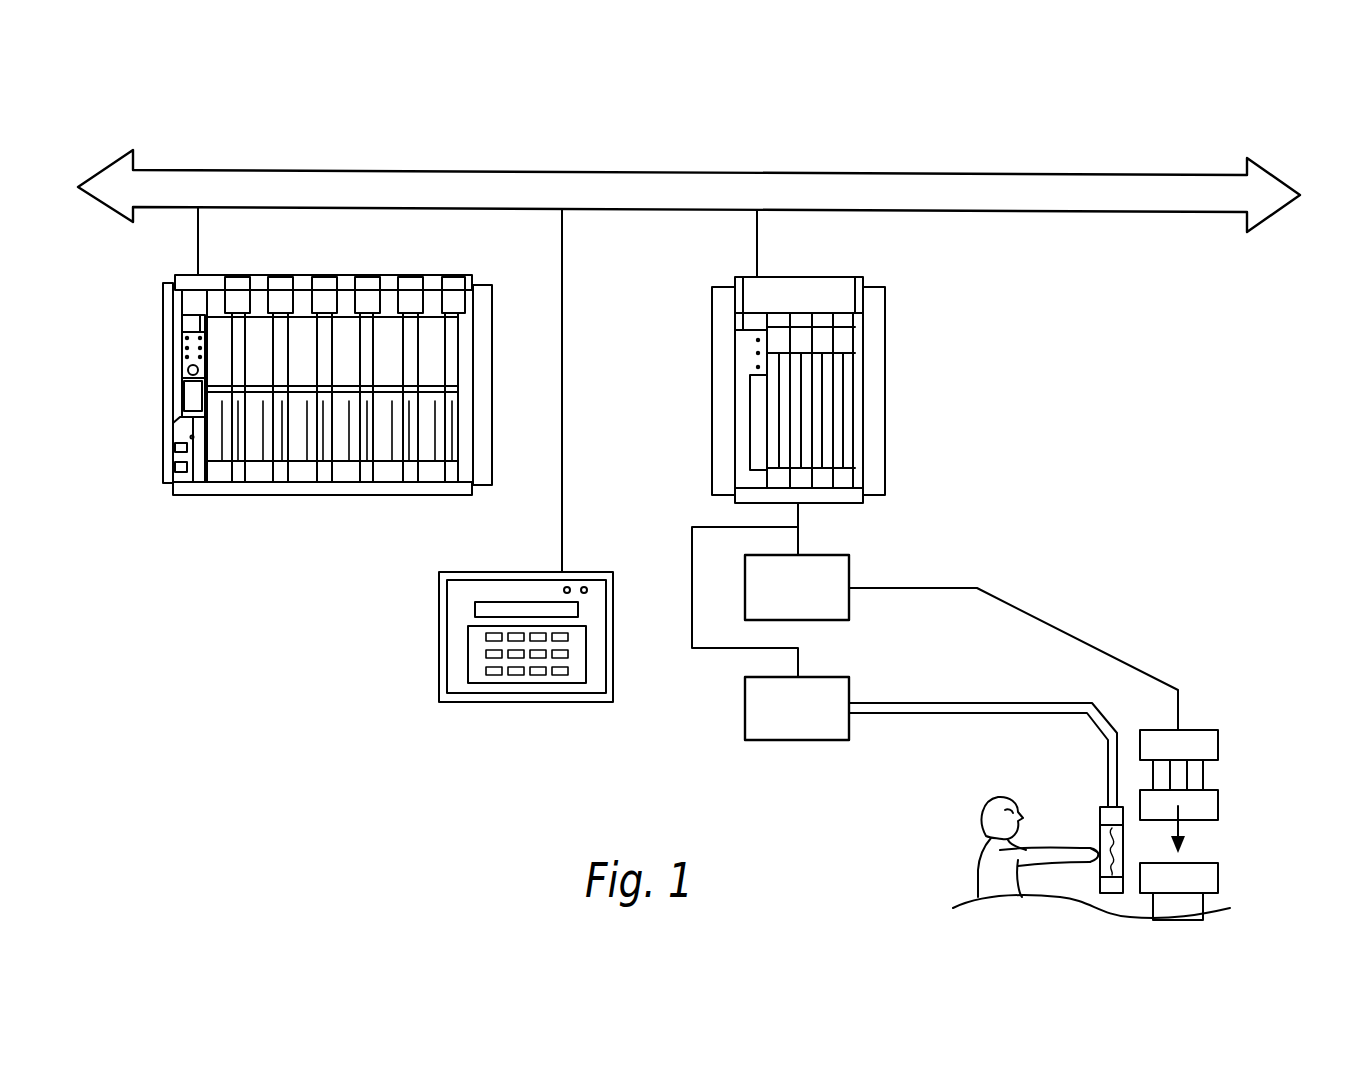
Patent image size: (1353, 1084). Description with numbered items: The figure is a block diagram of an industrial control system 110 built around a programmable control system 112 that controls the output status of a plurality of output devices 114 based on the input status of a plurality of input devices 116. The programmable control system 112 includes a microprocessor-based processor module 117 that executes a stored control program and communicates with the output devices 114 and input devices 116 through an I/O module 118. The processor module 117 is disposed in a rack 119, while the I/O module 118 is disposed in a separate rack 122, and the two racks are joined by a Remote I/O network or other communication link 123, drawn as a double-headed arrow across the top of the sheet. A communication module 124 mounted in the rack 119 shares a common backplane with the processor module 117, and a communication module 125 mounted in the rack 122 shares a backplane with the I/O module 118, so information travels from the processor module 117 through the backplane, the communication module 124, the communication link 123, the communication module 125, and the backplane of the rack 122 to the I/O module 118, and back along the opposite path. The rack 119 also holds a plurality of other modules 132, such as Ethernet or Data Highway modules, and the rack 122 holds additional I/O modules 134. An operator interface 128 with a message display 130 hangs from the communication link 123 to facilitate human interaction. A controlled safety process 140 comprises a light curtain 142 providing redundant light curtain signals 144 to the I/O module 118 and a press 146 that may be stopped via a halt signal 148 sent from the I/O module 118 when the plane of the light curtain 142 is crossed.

The industrial control system 110 is at (316, 150).
The programmable control system 112 is at (131, 296).
The output devices 114 is at (832, 555).
The input devices 116 is at (743, 717).
The processor module 117 is at (196, 475).
The I/O module 118 is at (780, 480).
The rack 119 is at (483, 285).
The rack 122 is at (877, 362).
The communication link 123 is at (1020, 175).
The communication module 124 is at (258, 475).
The communication module 125 is at (750, 363).
The operator interface 128 is at (439, 637).
The message display 130 is at (536, 600).
The other modules 132 is at (392, 476).
The additional I/O modules 134 is at (843, 335).
The controlled safety process 140 is at (1230, 697).
The light curtain 142 is at (1100, 828).
The redundant light curtain signals 144 is at (1118, 782).
The press 146 is at (1218, 805).
The halt signal 148 is at (1103, 652).